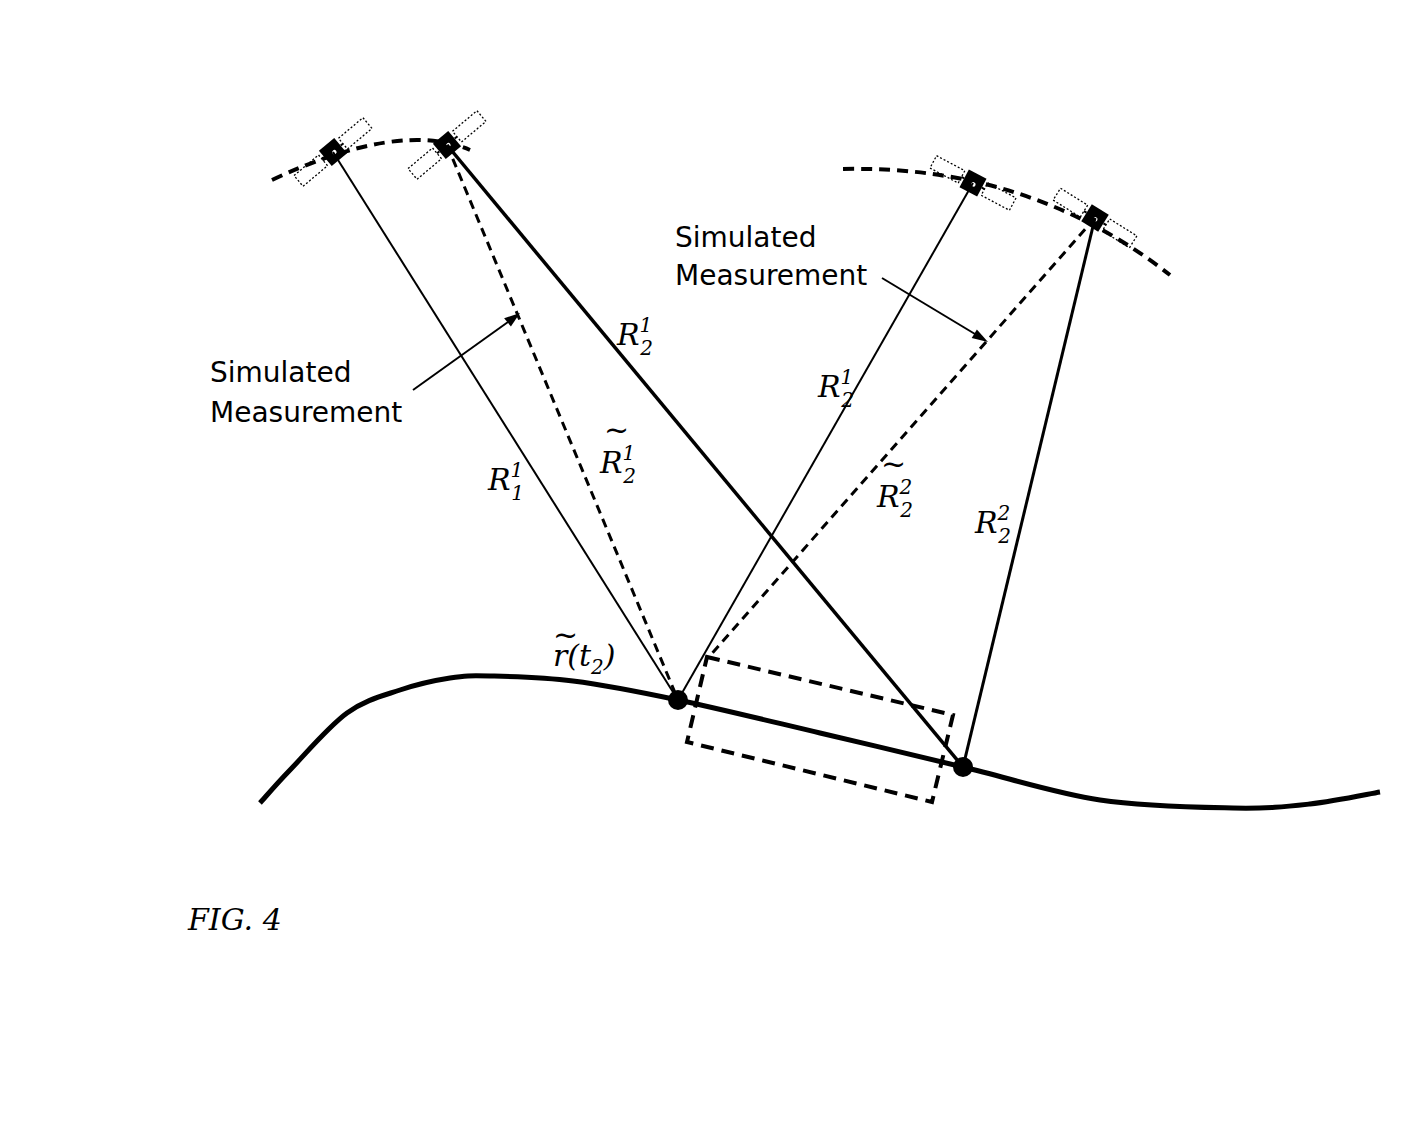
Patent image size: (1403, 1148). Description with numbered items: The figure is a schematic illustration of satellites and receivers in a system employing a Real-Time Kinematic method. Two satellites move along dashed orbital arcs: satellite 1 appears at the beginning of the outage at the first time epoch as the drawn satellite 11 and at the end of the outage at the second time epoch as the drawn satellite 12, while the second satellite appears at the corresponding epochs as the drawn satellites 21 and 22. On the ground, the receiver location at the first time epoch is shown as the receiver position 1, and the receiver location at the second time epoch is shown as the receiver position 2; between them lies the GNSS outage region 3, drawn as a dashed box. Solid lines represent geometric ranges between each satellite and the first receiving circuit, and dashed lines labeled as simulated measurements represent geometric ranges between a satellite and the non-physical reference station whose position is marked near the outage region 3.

The satellite s1 at time t1 11 is at (312, 143).
The satellite s1 at time t2 12 is at (436, 125).
The satellite s2 at time t1 21 is at (973, 170).
The satellite s2 at time t2 22 is at (1102, 209).
The satellite 1 is at (646, 724).
The receiver position r(t2) 2 is at (976, 788).
The GNSS outage region 3 is at (820, 729).